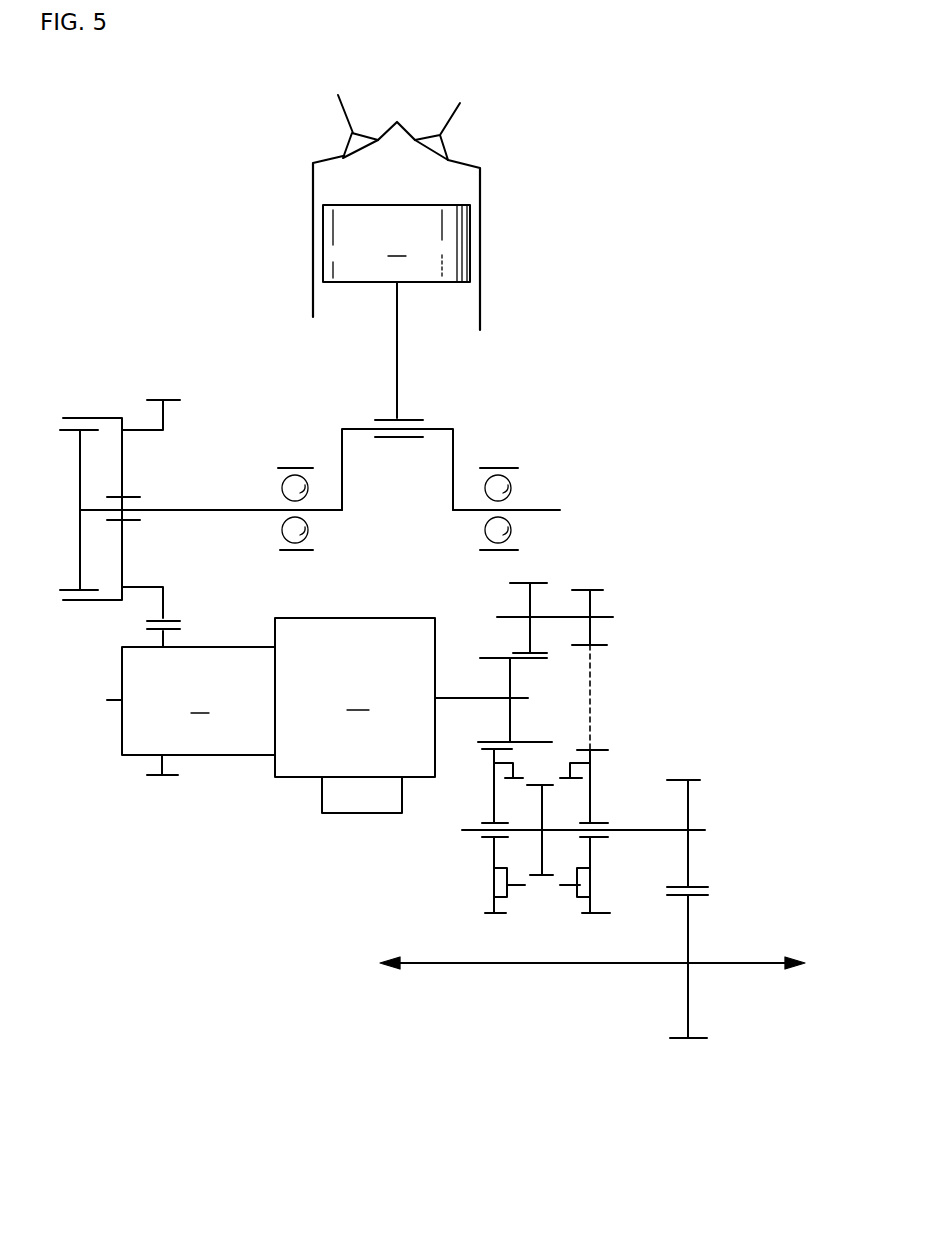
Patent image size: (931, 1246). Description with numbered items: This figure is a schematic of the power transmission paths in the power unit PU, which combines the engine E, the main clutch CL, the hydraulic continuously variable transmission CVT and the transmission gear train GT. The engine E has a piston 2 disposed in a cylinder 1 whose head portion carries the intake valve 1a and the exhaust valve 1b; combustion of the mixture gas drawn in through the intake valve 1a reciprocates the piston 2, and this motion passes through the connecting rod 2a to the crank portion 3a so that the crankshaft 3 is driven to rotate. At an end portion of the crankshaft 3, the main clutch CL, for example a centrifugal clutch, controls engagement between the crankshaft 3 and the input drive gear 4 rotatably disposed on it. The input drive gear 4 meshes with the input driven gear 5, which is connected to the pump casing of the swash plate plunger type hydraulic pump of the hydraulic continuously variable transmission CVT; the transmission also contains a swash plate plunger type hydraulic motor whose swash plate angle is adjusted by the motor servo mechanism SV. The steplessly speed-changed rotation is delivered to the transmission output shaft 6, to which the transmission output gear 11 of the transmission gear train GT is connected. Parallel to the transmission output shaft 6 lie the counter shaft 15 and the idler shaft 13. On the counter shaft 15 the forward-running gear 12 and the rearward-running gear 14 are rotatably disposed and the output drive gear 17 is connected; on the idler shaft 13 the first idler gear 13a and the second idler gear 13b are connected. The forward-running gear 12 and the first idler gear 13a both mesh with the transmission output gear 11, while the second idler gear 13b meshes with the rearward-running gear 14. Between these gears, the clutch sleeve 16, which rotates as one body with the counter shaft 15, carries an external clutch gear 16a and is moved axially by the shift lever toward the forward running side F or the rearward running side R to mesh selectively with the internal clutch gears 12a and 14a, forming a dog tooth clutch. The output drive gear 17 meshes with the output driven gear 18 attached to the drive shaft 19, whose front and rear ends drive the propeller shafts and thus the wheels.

The engine E is at (503, 238).
The power unit PU is at (652, 278).
The cylinder 1 is at (481, 295).
The intake valve 1a is at (455, 113).
The exhaust valve 1b is at (343, 103).
The piston 2 is at (396, 243).
The connecting rod 2a is at (398, 345).
The crankshaft 3 is at (220, 510).
The crank portion 3a is at (435, 427).
The main clutch CL is at (53, 457).
The input drive gear 4 is at (167, 400).
The input driven gear 5 is at (172, 779).
The hydraulic continuously variable transmission CVT is at (240, 840).
The motor servo mechanism SV is at (350, 814).
The transmission output shaft 6 is at (462, 697).
The transmission gear train GT is at (623, 742).
The transmission output gear 11 is at (490, 657).
The forward-running gear 12 is at (488, 915).
The internal clutch gear 12a is at (507, 870).
The idler shaft 13 is at (603, 612).
The first idler gear 13a is at (535, 582).
The second idler gear 13b is at (596, 588).
The rearward-running gear 14 is at (600, 915).
The internal clutch gear 14a is at (597, 863).
The counter shaft 15 is at (630, 828).
The clutch sleeve 16 is at (537, 808).
The external clutch gear 16a is at (543, 878).
The output drive gear 17 is at (700, 778).
The output driven gear 18 is at (683, 1043).
The drive shaft 19 is at (628, 967).
The forward direction F is at (364, 965).
The reverse direction R is at (822, 965).